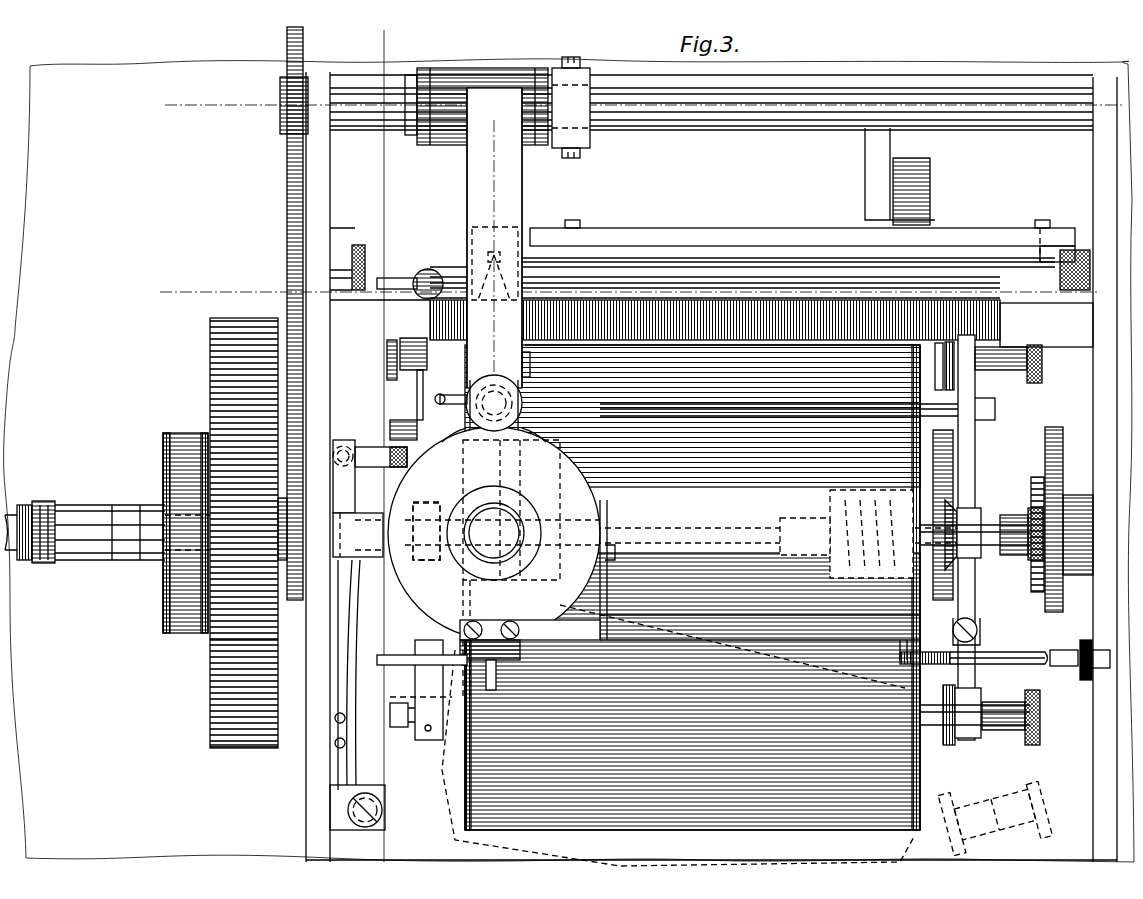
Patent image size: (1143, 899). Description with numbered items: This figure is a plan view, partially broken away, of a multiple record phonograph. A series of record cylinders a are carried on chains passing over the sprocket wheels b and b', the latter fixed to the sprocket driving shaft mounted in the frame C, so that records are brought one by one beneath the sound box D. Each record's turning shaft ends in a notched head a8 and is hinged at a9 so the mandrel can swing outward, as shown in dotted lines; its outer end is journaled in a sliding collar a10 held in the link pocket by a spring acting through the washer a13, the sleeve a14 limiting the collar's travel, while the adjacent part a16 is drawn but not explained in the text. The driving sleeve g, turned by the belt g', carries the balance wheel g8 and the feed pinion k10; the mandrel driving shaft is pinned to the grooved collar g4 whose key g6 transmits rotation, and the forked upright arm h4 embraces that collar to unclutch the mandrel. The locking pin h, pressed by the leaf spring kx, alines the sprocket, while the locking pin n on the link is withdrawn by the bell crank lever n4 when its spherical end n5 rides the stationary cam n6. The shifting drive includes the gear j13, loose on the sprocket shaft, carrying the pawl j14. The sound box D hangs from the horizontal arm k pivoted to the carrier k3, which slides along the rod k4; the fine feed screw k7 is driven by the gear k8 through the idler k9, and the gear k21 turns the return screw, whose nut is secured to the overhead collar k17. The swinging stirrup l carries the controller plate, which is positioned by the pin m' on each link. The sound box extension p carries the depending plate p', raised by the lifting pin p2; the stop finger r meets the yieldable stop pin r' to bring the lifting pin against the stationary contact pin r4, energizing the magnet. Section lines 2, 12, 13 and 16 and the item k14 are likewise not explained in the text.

The frame C is at (325, 206).
The section line 2 is at (375, 449).
The section line 12 is at (645, 104).
The section line 13 is at (630, 291).
The center line 16 is at (492, 379).
The rod k4 is at (762, 130).
The gear k21 is at (290, 172).
The sliding sound box carrier k3 is at (468, 68).
The overhead collar k17 is at (580, 126).
The swinging stirrup l is at (964, 246).
The feed screw k7 is at (700, 300).
The gear k8 is at (282, 286).
The record cylinder a is at (452, 851).
The horizontal arm k is at (467, 364).
The pin m' is at (465, 263).
The sound box D is at (575, 510).
The depending plate p' is at (592, 570).
The overhanging extension p is at (736, 646).
The depending stop finger r is at (530, 661).
The pivot a9 is at (425, 730).
The notched head a8 is at (400, 727).
The locking pin h is at (366, 764).
The spring kx is at (338, 668).
The driving feed pinion k10 is at (296, 603).
The locking pin n is at (418, 420).
The sprocket wheel b is at (370, 468).
The spherical end n5 is at (340, 468).
The bell crank lever n4 is at (378, 470).
The stationary cam n6 is at (352, 566).
The driving sleeve g is at (132, 517).
The grooved collar g4 is at (22, 505).
The key g6 is at (48, 502).
The upright arm h4 is at (38, 562).
The belt g' is at (185, 515).
The idler k9 is at (280, 484).
The balance wheel g8 is at (210, 690).
The sprocket wheel b' is at (970, 537).
The sleeve a16 is at (985, 366).
The sleeve a14 is at (1042, 364).
The washer a13 is at (958, 566).
The pawl j14 is at (1056, 494).
The gear j13 is at (1040, 638).
The lifting pin p2 is at (1035, 664).
The stationary contact pin r4 is at (1065, 650).
The stop pin r' is at (887, 680).
The sliding collar a10 is at (976, 804).
The stop k14 is at (530, 366).